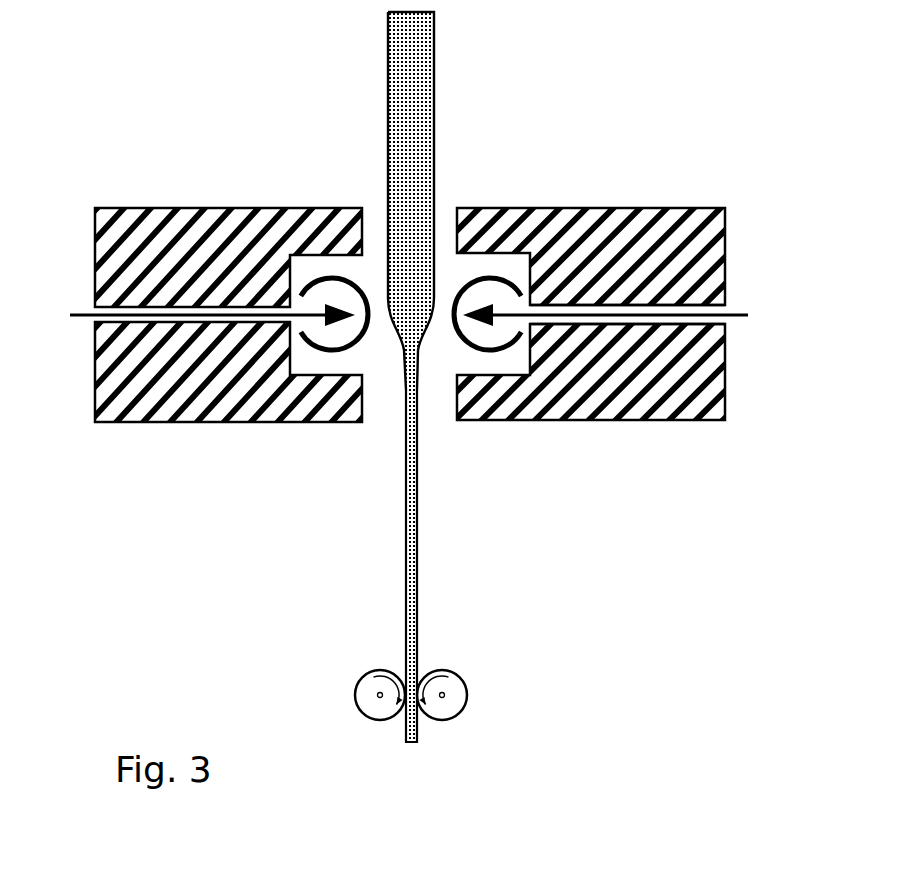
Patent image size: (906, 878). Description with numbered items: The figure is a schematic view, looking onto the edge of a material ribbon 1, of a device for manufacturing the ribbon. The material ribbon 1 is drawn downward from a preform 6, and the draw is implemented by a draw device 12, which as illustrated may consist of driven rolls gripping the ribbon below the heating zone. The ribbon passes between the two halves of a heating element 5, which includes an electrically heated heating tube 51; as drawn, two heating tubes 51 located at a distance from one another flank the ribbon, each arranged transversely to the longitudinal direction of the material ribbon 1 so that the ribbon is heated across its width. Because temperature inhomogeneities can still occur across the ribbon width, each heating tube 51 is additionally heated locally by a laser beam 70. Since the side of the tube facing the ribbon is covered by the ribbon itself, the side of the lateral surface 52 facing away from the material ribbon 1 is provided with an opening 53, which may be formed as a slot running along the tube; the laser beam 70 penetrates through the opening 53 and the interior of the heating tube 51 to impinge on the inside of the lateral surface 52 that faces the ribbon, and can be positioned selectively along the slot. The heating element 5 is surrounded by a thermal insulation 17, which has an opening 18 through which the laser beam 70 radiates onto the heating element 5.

The material ribbon 1 is at (417, 562).
The preform 6 is at (434, 122).
The heating element 5 is at (424, 318).
The heating tube 51 is at (424, 386).
The lateral surface 52 is at (497, 348).
The opening 53 is at (523, 305).
The thermal insulation 17 is at (675, 208).
The opening 18 is at (95, 323).
The laser beam 70 is at (80, 311).
The draw device 12 is at (490, 687).